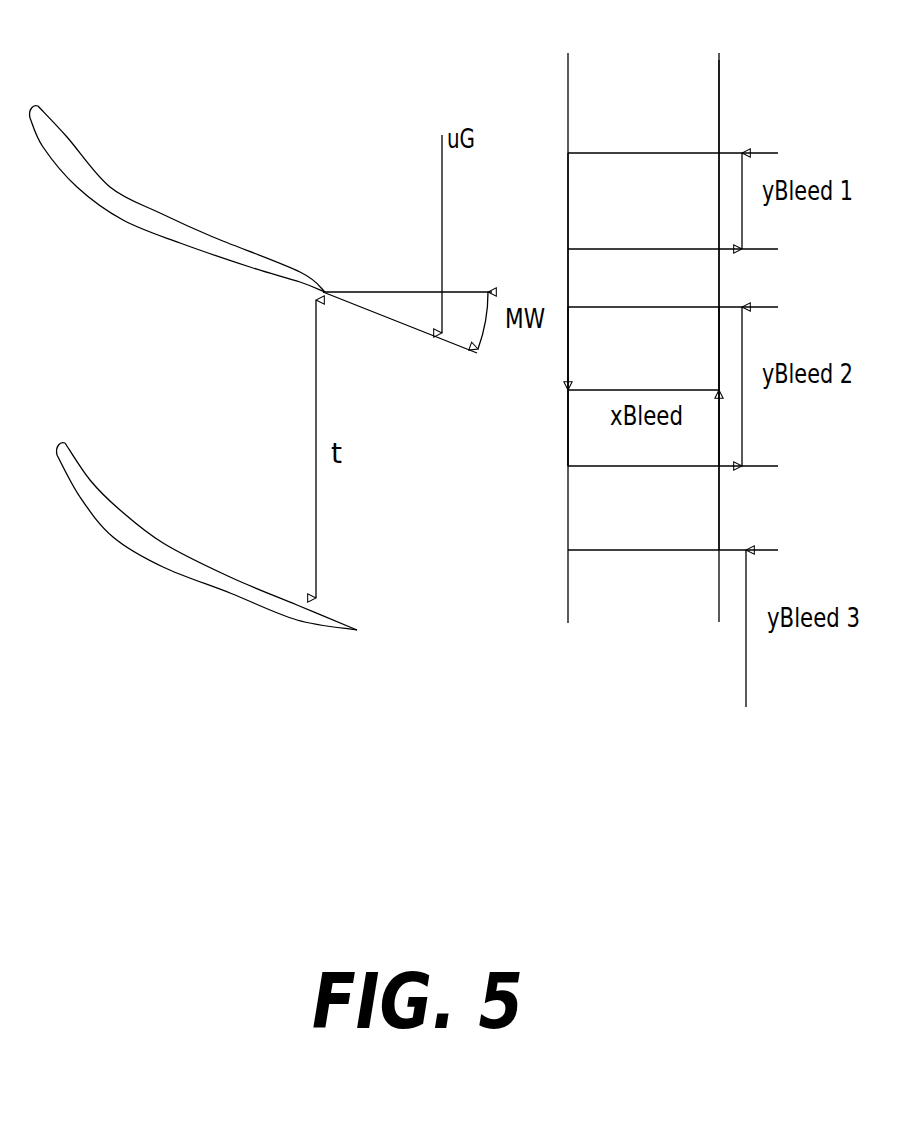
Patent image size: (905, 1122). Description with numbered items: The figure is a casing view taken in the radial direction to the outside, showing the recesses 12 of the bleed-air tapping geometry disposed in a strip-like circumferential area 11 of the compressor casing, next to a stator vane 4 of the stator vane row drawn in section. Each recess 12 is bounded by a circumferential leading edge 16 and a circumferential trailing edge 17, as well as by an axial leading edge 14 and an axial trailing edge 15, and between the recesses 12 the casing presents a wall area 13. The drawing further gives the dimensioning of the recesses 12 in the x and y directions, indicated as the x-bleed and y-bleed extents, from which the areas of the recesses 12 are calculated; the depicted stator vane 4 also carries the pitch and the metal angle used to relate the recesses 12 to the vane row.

The stator vane 4 is at (110, 520).
The circumferential area 11 is at (611, 613).
The recess 12 is at (583, 213).
The wall area 13 is at (697, 111).
The axial leading edge 14 is at (568, 352).
The axial trailing edge 15 is at (720, 348).
The circumferential leading edge 16 is at (600, 153).
The circumferential trailing edge 17 is at (645, 249).